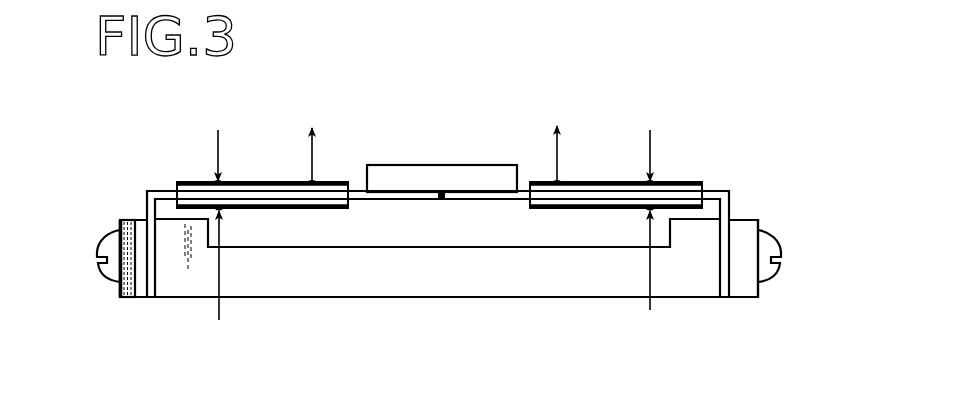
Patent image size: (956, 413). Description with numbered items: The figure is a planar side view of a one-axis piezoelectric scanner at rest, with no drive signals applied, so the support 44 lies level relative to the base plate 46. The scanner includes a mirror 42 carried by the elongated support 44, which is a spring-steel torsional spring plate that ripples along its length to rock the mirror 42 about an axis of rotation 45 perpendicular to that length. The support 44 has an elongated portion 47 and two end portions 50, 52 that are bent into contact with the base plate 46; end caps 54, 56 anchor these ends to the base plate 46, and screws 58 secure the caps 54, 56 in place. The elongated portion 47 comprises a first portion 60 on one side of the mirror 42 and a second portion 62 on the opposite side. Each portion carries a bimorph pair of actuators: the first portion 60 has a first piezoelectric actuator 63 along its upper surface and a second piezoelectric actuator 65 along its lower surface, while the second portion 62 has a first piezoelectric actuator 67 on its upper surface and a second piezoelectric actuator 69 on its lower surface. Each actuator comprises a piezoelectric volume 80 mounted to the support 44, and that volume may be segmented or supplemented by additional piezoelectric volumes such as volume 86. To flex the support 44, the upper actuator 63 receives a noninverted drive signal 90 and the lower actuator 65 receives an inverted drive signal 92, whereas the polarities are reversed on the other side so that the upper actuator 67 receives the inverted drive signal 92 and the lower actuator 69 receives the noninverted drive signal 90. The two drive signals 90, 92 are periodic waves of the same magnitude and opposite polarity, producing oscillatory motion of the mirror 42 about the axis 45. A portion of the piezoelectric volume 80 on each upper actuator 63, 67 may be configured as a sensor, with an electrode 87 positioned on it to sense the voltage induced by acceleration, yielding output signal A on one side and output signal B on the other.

The mirror 42 is at (452, 165).
The support 44 is at (504, 210).
The axis of rotation 45 is at (442, 201).
The base plate 46 is at (477, 288).
The elongated portion 47 is at (370, 201).
The end portion 50 is at (157, 281).
The end portion 52 is at (717, 274).
The end cap 54 is at (130, 218).
The end cap 56 is at (749, 220).
The screws 58 is at (110, 232).
The first portion 60 is at (159, 190).
The second portion 62 is at (724, 192).
The first piezoelectric actuator 63 is at (185, 147).
The second piezoelectric actuator 65 is at (233, 225).
The first piezoelectric actuator 67 is at (621, 91).
The second piezoelectric actuator 69 is at (609, 231).
The piezoelectric volume 80 is at (605, 209).
The piezoelectric volume 86 is at (339, 181).
The electrode 87 is at (313, 177).
The noninverted drive signal 90 is at (220, 158).
The inverted drive signal 92 is at (222, 276).